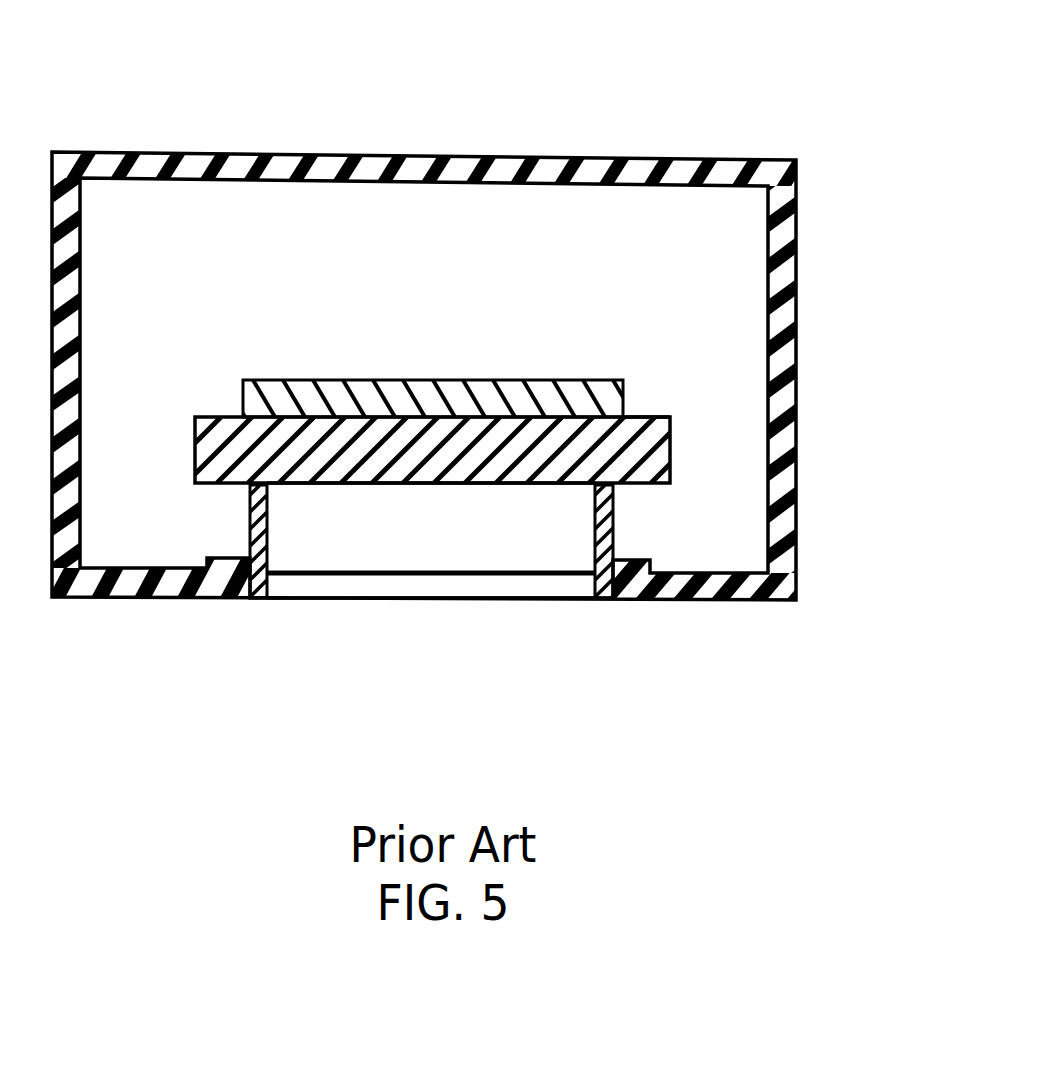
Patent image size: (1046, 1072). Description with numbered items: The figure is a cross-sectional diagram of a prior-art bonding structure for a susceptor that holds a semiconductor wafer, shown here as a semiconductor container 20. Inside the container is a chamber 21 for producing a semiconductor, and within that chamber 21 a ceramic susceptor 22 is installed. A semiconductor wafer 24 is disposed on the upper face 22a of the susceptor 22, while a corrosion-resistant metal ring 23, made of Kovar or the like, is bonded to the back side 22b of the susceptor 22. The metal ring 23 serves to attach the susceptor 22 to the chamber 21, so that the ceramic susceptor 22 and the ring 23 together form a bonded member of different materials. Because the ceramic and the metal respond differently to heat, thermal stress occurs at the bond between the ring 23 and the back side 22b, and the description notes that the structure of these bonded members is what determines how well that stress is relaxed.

The semiconductor device package 20 is at (485, 320).
The chamber 21 is at (795, 290).
The ceramic susceptor 22 is at (530, 474).
The upper surface of substrate 22a is at (640, 415).
The back side of the susceptor 22b is at (355, 486).
The corrosion-resistant metal ring 23 is at (640, 518).
The semiconductor wafer 24 is at (312, 380).